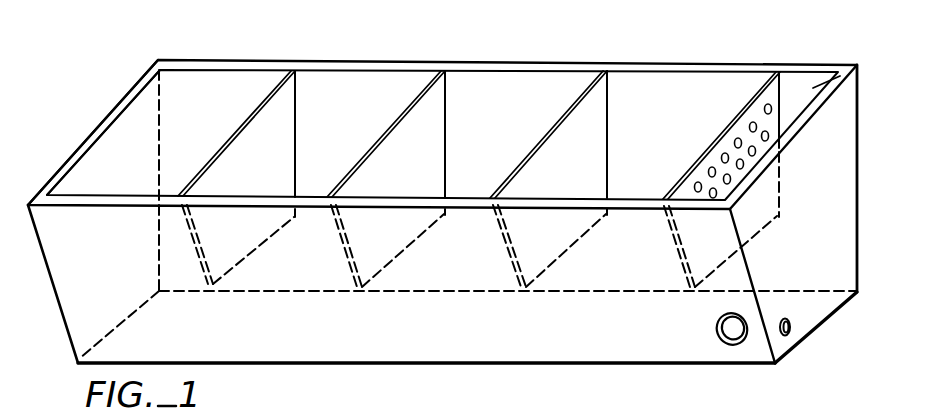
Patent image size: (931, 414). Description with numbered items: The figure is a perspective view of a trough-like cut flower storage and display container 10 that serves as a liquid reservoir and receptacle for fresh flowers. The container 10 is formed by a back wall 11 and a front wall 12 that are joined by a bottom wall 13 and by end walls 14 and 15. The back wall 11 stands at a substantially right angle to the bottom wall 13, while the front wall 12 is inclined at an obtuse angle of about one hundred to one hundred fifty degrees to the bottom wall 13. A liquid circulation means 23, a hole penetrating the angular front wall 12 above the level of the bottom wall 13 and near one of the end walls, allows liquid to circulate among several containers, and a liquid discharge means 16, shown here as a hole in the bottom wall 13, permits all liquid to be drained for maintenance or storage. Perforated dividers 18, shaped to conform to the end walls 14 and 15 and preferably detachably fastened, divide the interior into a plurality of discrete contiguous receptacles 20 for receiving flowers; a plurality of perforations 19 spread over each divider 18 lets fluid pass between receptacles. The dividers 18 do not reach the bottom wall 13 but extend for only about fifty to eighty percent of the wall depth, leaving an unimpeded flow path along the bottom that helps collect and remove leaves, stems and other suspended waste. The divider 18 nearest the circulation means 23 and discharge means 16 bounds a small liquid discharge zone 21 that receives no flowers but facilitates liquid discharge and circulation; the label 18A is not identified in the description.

The trough-like cut flower storage and display container 10 is at (472, 53).
The back wall 11 is at (501, 159).
The front wall 12 is at (293, 275).
The bottom wall 13 is at (558, 354).
The end wall 14 is at (109, 115).
The end wall 15 is at (841, 240).
The liquid discharge means 16 is at (796, 326).
The perforated divider 18 is at (760, 84).
The perforated partition section 18A is at (569, 405).
The perforations 19 is at (771, 110).
The contiguous receptacles 20 is at (190, 79).
The liquid discharge zone 21 is at (813, 88).
The liquid circulation means 23 is at (721, 347).